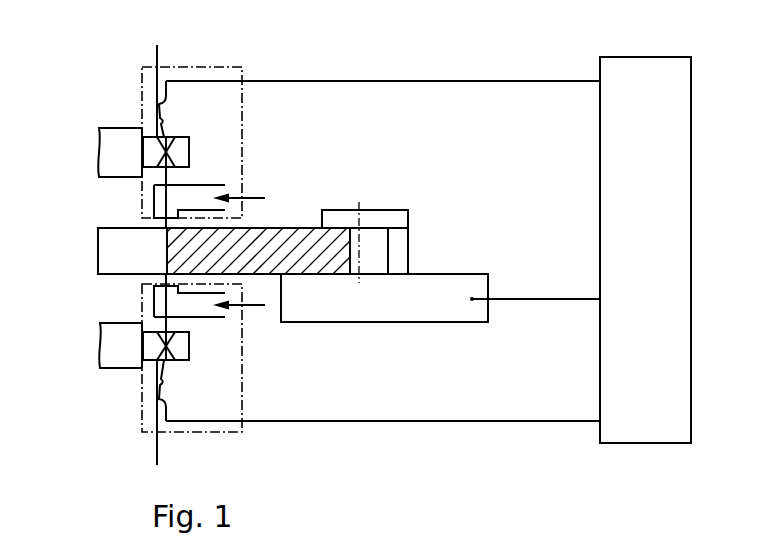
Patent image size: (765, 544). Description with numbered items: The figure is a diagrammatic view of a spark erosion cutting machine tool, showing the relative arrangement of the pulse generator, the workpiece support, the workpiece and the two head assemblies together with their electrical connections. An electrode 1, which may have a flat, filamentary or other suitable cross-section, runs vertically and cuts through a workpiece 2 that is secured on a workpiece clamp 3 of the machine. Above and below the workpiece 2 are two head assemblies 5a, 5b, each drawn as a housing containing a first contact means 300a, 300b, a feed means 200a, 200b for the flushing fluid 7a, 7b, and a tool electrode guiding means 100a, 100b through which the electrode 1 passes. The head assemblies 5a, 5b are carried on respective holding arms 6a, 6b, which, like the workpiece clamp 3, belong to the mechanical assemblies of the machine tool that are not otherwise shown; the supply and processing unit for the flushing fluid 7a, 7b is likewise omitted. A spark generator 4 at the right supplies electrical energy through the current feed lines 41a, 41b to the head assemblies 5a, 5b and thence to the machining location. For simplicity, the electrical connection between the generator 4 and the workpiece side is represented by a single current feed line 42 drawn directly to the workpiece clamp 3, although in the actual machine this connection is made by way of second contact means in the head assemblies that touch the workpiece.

The electrode 1 is at (155, 452).
The workpiece 2 is at (305, 226).
The workpiece clamp 3 is at (425, 288).
The spark generator 4 is at (678, 300).
The current feed line 41a is at (502, 80).
The current feed line 41b is at (502, 420).
The current feed line 42 is at (501, 298).
The head assembly 5a is at (228, 123).
The head assembly 5b is at (228, 427).
The holding arm 6a is at (110, 158).
The holding arm 6b is at (113, 333).
The flushing fluid 7a is at (245, 198).
The flushing fluid 7b is at (242, 307).
The tool electrode guiding means 100a is at (180, 155).
The tool electrode guiding means 100b is at (176, 354).
The feed means 200a is at (172, 193).
The feed means 200b is at (175, 310).
The first contact means 300a is at (168, 88).
The first contact means 300b is at (167, 410).